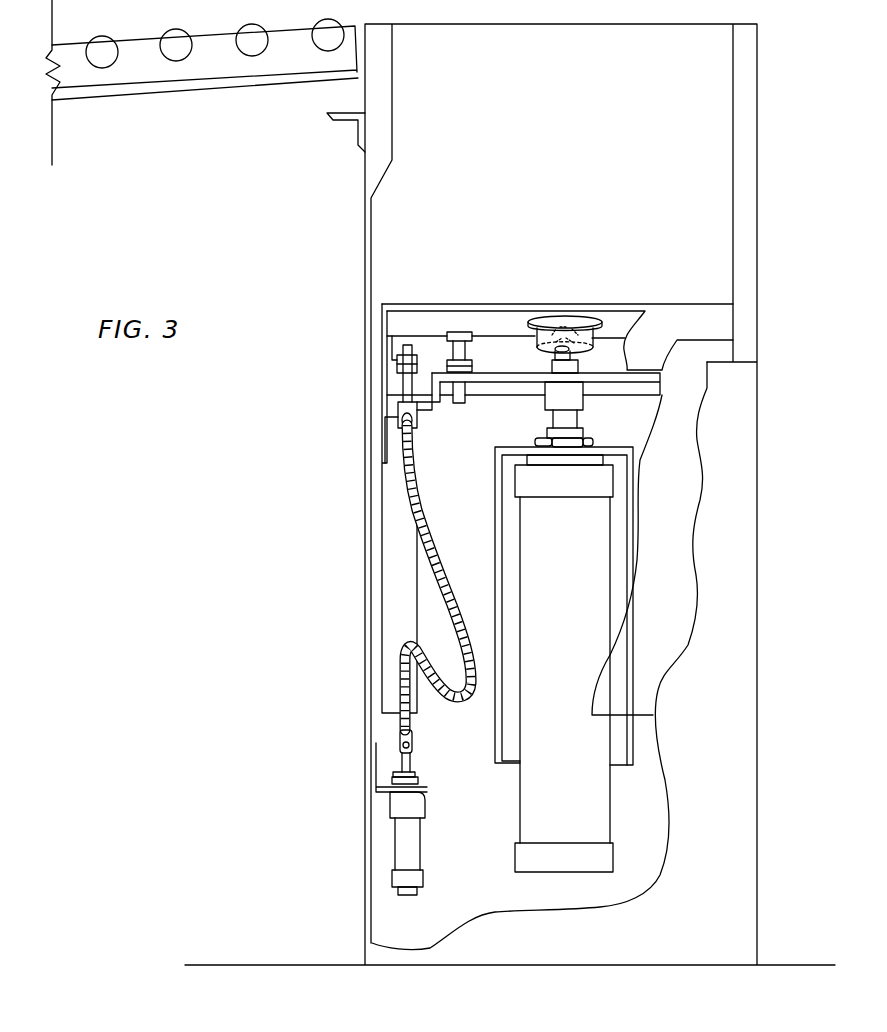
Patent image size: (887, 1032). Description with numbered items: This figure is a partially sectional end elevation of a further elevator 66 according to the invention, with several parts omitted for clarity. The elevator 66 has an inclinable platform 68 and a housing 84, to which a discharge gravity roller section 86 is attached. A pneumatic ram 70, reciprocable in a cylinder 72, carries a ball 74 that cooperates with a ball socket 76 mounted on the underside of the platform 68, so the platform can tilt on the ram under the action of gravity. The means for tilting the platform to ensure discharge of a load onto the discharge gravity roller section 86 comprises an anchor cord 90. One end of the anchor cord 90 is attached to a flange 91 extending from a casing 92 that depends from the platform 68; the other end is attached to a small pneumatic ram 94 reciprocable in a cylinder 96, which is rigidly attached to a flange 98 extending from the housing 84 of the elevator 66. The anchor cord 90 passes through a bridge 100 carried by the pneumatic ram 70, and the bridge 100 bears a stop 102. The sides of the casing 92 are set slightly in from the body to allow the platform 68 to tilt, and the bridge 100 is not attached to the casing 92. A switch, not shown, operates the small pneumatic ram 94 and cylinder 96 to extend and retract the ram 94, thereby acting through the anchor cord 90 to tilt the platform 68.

The elevator 66 is at (758, 598).
The inclinable platform 68 is at (498, 303).
The pneumatic ram 70 is at (560, 418).
The cylinder 72 is at (563, 652).
The ball 74 is at (563, 320).
The ball socket 76 is at (582, 328).
The housing 84 is at (698, 867).
The discharge gravity roller section 86 is at (208, 62).
The anchor cord 90 is at (430, 572).
The flange 91 is at (393, 365).
The casing 92 is at (383, 323).
The small pneumatic ram 94 is at (395, 776).
The cylinder 96 is at (403, 850).
The flange 98 is at (380, 790).
The bridge 100 is at (427, 417).
The stop 102 is at (451, 331).